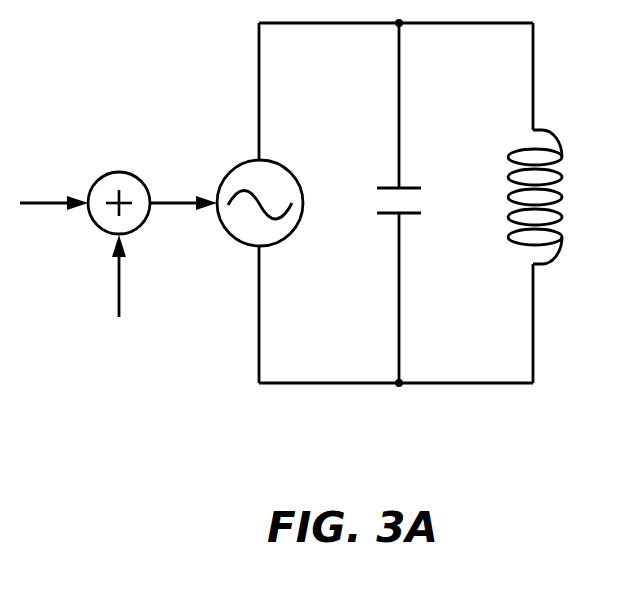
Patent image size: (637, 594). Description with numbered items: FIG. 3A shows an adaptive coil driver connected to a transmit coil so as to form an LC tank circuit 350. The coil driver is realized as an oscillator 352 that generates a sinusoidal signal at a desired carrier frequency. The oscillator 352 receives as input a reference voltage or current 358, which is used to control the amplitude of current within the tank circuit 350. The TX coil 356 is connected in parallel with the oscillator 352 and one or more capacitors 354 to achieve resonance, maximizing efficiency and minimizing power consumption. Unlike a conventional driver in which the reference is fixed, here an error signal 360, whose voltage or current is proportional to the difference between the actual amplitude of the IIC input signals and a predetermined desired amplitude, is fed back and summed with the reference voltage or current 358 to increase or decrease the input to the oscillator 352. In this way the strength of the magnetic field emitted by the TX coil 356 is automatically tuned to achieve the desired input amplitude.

The LC tank circuit 350 is at (88, 57).
The oscillator 352 is at (285, 170).
The capacitor 354 is at (383, 197).
The TX coil 356 is at (508, 165).
The reference voltage or current 358 is at (41, 204).
The error signal 360 is at (120, 283).